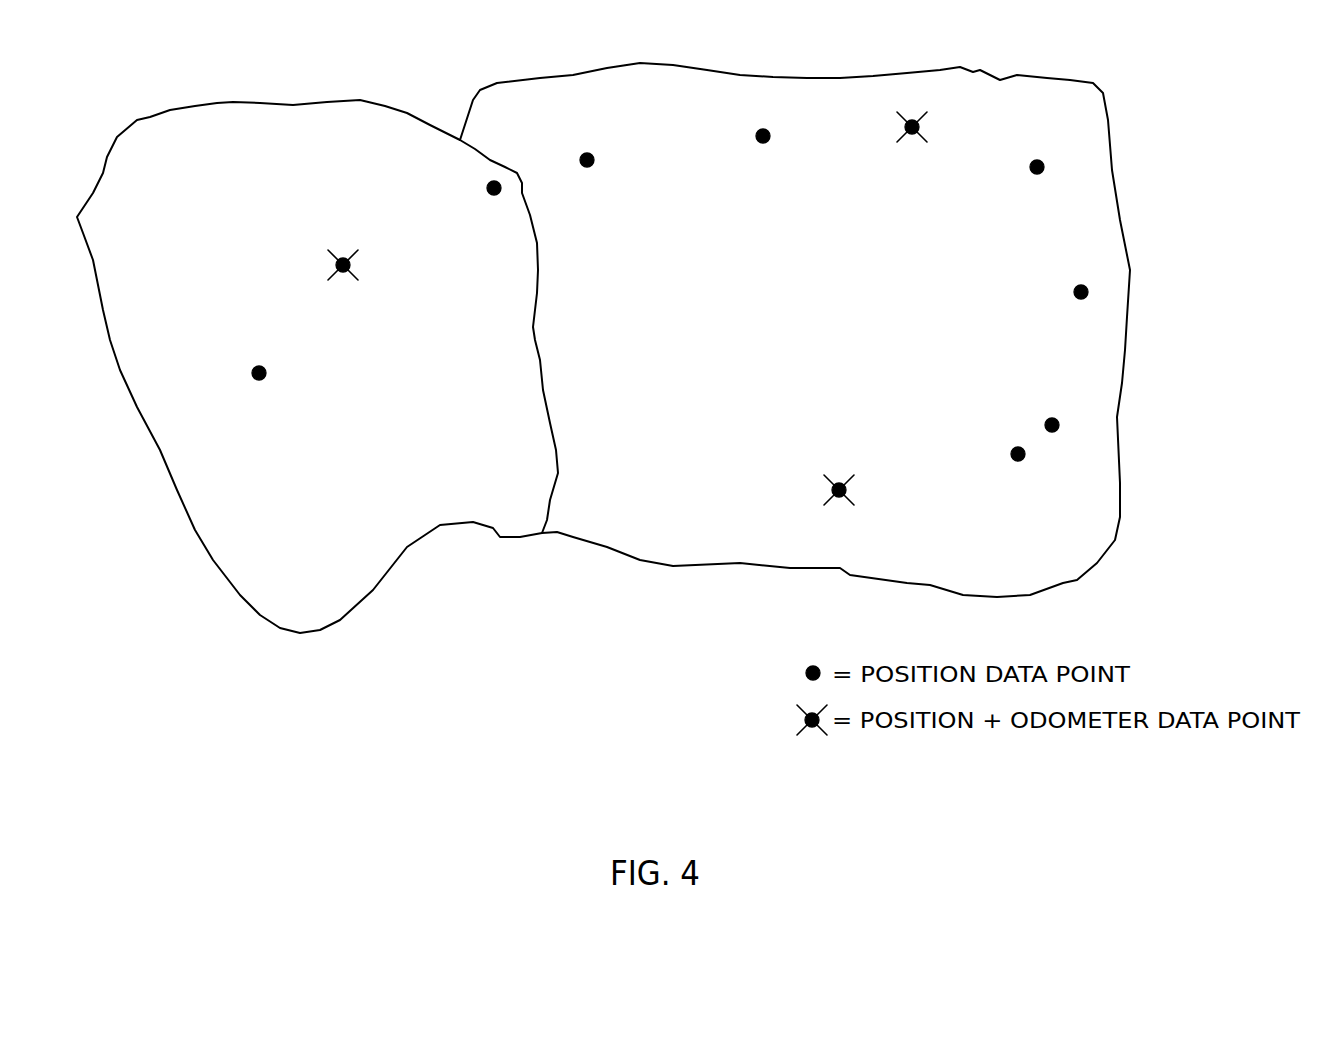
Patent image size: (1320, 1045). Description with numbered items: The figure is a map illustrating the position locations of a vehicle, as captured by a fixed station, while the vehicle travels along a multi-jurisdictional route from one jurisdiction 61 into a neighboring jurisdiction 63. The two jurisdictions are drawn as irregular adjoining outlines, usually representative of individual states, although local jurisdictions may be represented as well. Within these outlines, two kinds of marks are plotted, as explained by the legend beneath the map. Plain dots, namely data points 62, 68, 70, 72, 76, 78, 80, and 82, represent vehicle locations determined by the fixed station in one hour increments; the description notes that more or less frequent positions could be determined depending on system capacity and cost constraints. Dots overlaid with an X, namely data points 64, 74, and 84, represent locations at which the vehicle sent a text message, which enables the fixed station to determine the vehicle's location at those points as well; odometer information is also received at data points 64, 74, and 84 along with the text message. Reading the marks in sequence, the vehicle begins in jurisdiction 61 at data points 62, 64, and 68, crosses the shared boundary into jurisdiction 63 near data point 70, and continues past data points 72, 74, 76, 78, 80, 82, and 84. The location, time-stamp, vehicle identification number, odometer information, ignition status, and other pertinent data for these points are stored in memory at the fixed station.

The jurisdiction 61 is at (243, 102).
The jurisdiction 63 is at (957, 66).
The data point 62 is at (257, 381).
The data point 64 is at (339, 273).
The data point 68 is at (491, 197).
The data point 70 is at (585, 168).
The data point 72 is at (762, 146).
The data point 74 is at (910, 138).
The data point 76 is at (1035, 177).
The data point 78 is at (1079, 302).
The data point 80 is at (1052, 435).
The data point 82 is at (1017, 464).
The data point 84 is at (838, 500).